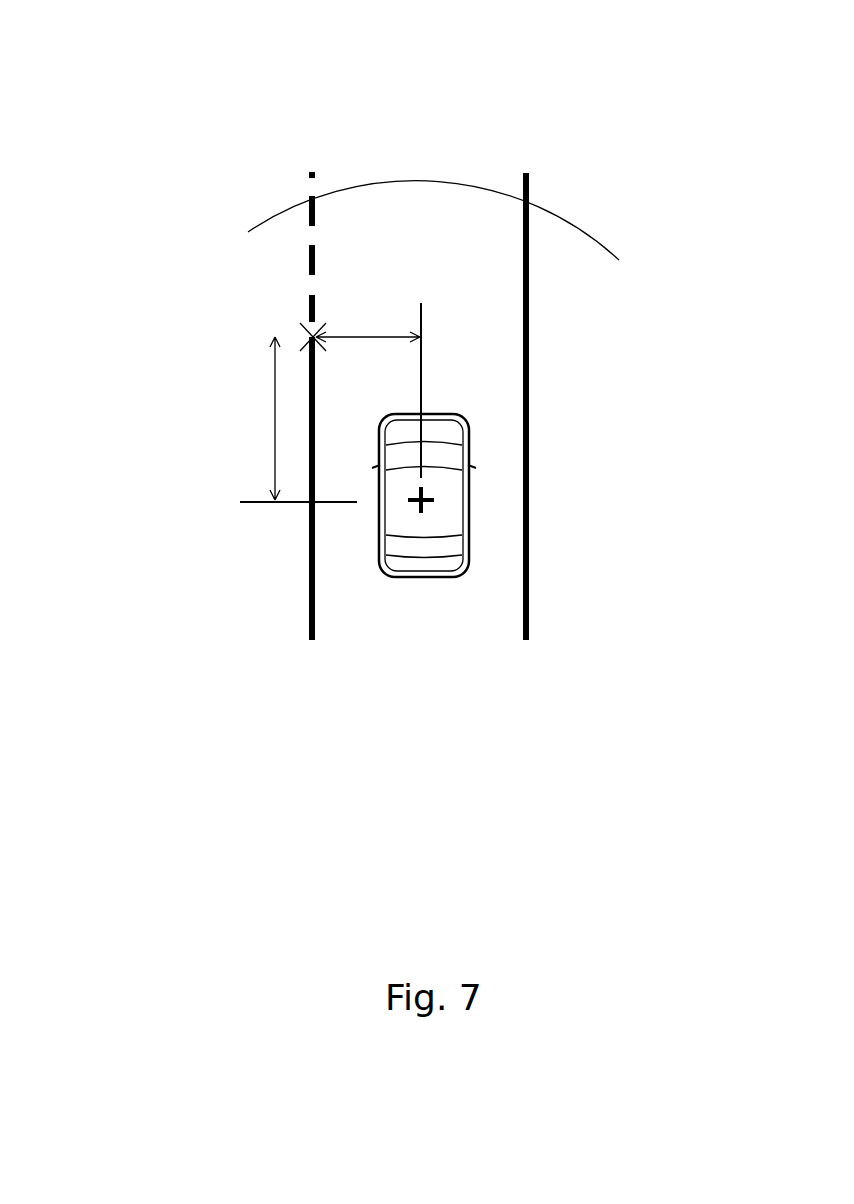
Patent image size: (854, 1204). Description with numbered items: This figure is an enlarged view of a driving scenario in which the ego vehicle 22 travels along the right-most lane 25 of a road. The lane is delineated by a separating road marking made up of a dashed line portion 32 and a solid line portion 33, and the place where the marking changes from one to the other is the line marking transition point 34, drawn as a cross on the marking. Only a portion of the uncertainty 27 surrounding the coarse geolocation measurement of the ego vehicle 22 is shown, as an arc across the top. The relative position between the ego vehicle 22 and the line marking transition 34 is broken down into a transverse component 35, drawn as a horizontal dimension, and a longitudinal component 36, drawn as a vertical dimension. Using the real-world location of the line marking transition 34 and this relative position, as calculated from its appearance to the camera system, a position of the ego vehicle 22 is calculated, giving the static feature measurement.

The ego vehicle 22 is at (430, 545).
The right-most lane 25 is at (395, 633).
The uncertainty 27 is at (567, 218).
The dashed line portion 32 is at (300, 270).
The solid line portion 33 is at (300, 565).
The line marking transition point 34 is at (300, 330).
The transverse component 35 is at (372, 330).
The longitudinal component 36 is at (268, 418).